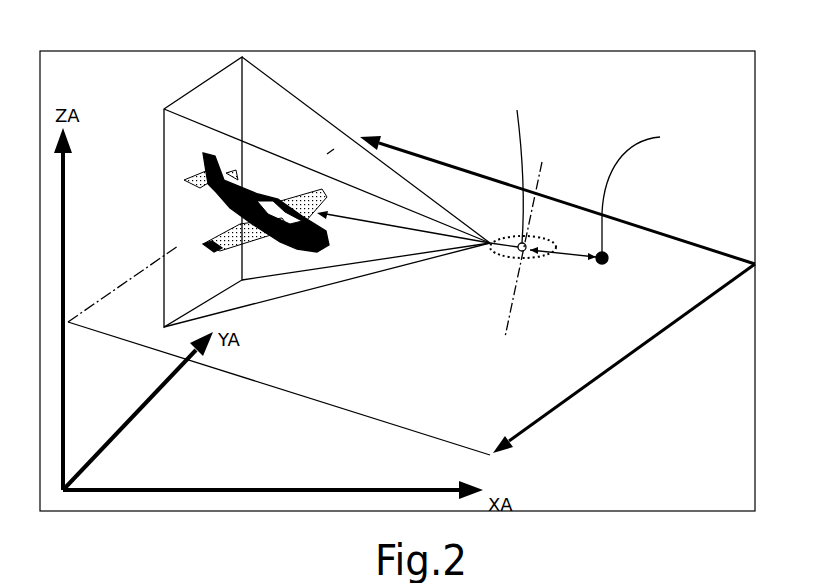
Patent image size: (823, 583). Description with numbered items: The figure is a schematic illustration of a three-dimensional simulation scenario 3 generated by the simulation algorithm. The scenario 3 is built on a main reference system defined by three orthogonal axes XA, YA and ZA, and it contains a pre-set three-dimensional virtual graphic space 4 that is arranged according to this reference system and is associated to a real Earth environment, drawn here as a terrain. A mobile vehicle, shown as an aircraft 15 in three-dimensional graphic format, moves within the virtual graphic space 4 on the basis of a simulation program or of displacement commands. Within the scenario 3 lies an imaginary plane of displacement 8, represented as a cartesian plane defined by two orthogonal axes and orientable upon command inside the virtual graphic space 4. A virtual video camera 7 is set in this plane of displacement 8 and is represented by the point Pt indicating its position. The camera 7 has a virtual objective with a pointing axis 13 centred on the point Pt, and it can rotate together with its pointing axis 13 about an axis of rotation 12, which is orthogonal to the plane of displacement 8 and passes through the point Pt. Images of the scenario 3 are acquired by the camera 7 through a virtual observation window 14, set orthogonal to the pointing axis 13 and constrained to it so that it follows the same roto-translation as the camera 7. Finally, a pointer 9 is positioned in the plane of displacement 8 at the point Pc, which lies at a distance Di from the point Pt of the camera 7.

The three-dimensional simulation scenario 3 is at (148, 447).
The three-dimensional virtual graphic space 4 is at (660, 426).
The virtual video camera 7 is at (542, 262).
The imaginary plane of displacement 8 is at (640, 256).
The pointer 9 is at (602, 213).
The axis of rotation 12 is at (520, 263).
The pointing axis 13 is at (365, 222).
The virtual observation window 14 is at (162, 162).
The aircraft target 15 is at (248, 200).